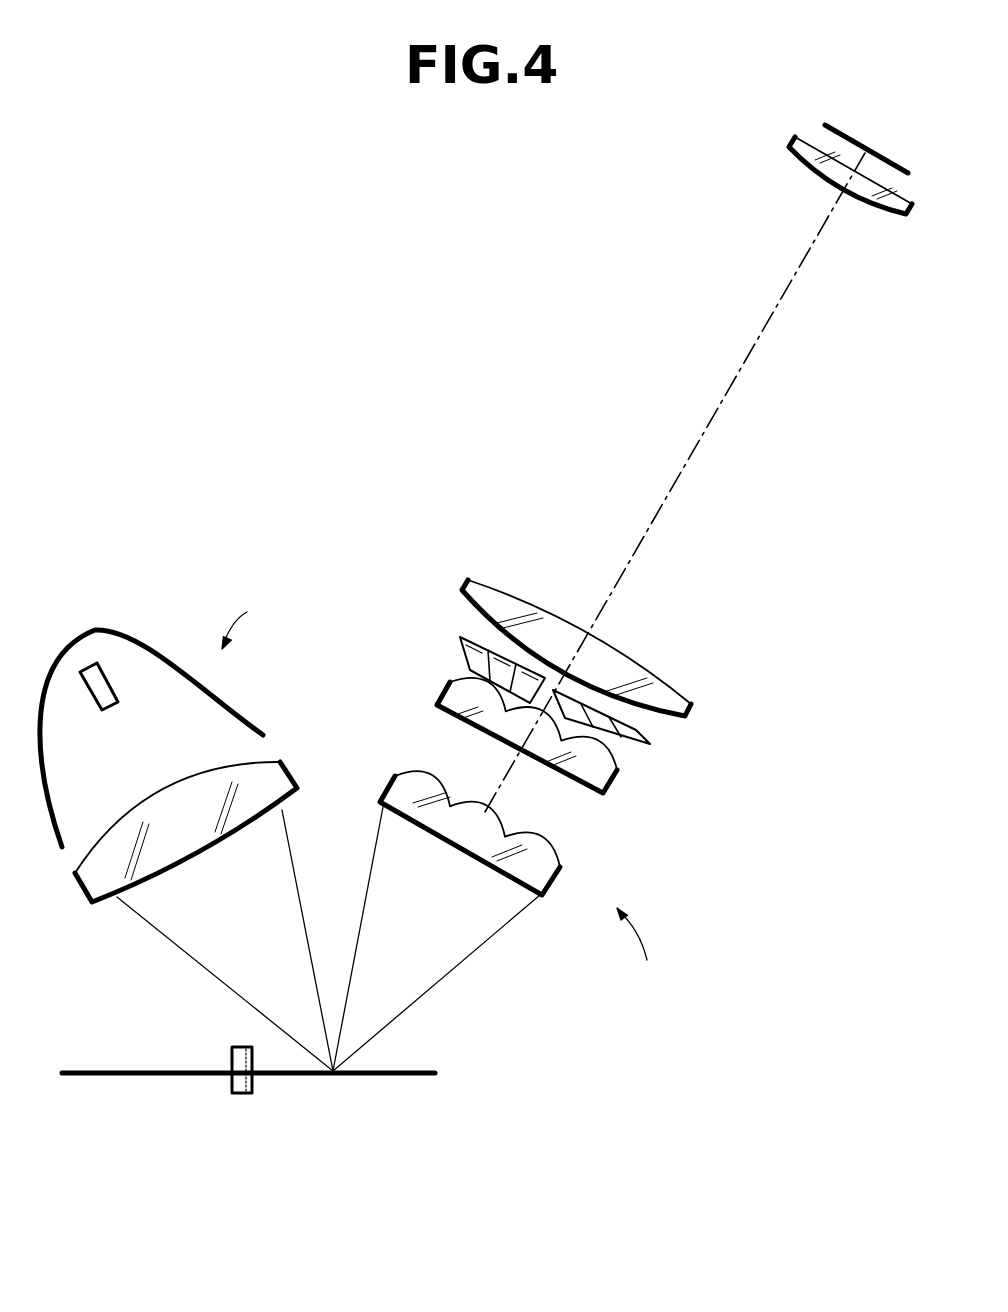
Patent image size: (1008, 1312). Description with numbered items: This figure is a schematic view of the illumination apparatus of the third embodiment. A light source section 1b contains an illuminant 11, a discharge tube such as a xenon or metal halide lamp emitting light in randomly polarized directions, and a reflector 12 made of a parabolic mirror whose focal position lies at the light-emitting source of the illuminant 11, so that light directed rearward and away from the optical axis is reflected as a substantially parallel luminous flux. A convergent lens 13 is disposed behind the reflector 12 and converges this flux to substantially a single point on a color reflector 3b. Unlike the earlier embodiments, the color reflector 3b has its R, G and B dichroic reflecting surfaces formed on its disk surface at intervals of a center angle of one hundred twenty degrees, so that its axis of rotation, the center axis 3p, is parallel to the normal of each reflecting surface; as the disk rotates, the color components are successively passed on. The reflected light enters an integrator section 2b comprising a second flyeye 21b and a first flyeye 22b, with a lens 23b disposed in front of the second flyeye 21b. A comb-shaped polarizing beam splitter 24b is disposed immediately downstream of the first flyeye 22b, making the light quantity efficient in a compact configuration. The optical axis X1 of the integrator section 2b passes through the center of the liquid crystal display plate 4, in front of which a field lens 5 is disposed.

The illumination unit 1b is at (250, 619).
The illuminant 11 is at (94, 712).
The reflector 12 is at (152, 650).
The convergent lens 13 is at (82, 894).
The illumination optical unit 2b is at (638, 950).
The first lens array 21b is at (386, 790).
The first flyeye 22b is at (445, 686).
The condenser lens 23b is at (493, 580).
The comb-shaped polarizing beam splitter 24b is at (633, 747).
The color reflector 3b is at (122, 1075).
The center axis 3p is at (246, 1093).
The liquid crystal display plate 4 is at (826, 131).
The field lens 5 is at (797, 151).
The optical axis X1 is at (696, 445).